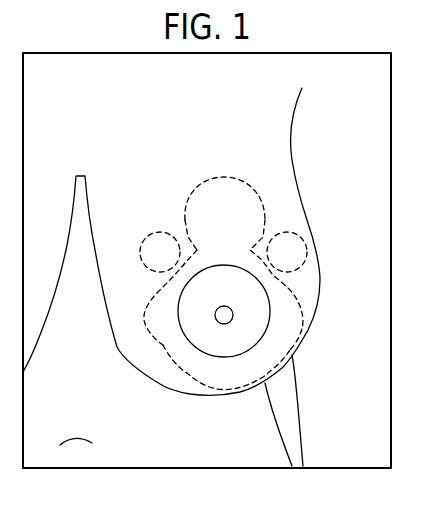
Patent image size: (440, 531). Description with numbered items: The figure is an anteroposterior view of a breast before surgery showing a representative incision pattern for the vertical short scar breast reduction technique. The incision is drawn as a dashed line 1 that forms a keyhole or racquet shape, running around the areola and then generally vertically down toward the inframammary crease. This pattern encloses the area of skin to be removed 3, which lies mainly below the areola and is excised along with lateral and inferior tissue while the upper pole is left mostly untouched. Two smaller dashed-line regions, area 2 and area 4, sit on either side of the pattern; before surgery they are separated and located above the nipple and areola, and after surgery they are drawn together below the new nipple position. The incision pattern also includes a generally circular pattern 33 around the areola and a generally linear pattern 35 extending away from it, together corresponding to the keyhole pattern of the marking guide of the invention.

The dashed line 1 is at (204, 181).
The area 2 is at (168, 262).
The area of skin to be removed 3 is at (200, 367).
The area 4 is at (295, 262).
The generally circular pattern 33 is at (224, 210).
The generally linear pattern 35 is at (287, 289).